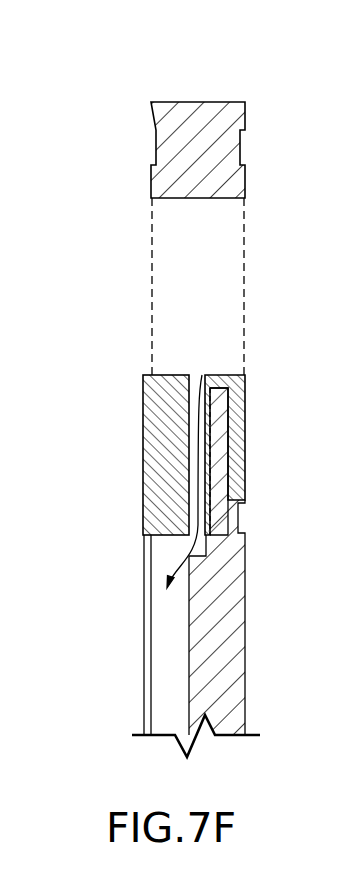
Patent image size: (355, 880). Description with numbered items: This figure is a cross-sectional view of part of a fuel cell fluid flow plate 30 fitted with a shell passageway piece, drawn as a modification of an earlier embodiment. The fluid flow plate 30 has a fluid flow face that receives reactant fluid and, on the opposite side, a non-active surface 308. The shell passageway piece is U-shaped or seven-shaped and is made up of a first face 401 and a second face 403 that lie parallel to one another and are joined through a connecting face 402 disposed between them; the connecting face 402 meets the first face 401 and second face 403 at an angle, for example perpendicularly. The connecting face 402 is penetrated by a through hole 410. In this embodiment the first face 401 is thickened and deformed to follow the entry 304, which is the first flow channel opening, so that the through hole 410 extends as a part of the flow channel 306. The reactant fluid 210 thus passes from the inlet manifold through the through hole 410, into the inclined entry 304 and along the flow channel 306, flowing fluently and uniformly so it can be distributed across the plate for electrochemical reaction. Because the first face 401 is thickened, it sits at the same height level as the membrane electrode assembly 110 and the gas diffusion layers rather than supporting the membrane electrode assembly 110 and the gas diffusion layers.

The fluid flow plate 30 is at (119, 112).
The membrane electrode assembly 110 is at (144, 628).
The reactant fluid 210 is at (202, 375).
The entry 304 is at (175, 543).
The flow channel 306 is at (163, 680).
The non-active surface 308 is at (246, 660).
The first face 401 is at (143, 415).
The connecting face 402 is at (243, 373).
The second face 403 is at (245, 447).
The through hole 410 is at (193, 373).